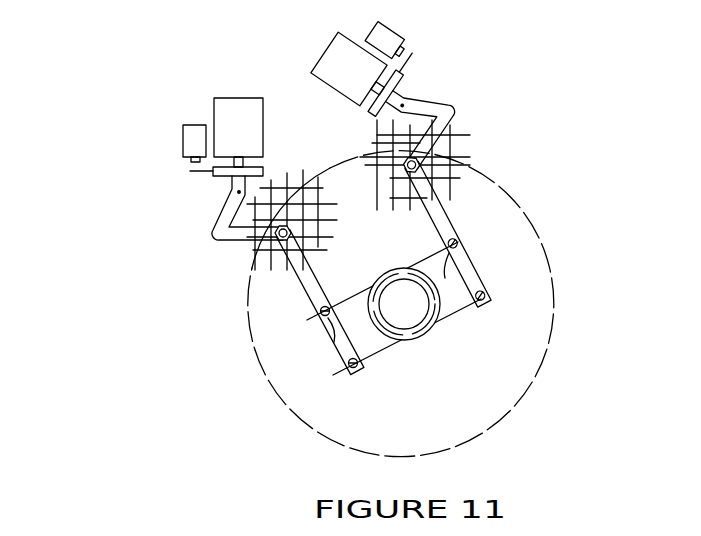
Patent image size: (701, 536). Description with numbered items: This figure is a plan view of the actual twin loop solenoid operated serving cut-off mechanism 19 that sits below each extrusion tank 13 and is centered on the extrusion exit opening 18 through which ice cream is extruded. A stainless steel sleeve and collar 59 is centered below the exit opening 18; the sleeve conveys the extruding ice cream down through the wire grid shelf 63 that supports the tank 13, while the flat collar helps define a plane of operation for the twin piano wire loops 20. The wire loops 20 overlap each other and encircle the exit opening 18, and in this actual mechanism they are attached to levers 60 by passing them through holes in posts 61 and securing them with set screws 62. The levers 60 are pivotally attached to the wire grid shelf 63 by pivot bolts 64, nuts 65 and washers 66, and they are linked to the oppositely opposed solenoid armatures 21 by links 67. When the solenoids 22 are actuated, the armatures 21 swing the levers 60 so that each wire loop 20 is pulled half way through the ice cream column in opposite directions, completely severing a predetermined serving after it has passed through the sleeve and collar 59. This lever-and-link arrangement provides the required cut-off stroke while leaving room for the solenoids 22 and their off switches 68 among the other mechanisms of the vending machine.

The extrusion tank 13 is at (555, 292).
The extrusion exit opening 18 is at (388, 269).
The serving cut-off mechanism 19 is at (236, 56).
The piano wire loops 20 is at (382, 348).
The solenoid armature 21 is at (215, 173).
The solenoid 22 is at (224, 97).
The sleeve and collar 59 is at (430, 336).
The lever 60 is at (262, 294).
The post 61 is at (322, 311).
The set screw 62 is at (334, 343).
The wire grid shelf 63 is at (374, 132).
The pivot bolt 64 is at (406, 168).
The nut 65 is at (407, 172).
The washer 66 is at (297, 240).
The link 67 is at (226, 212).
The off switch 68 is at (183, 135).